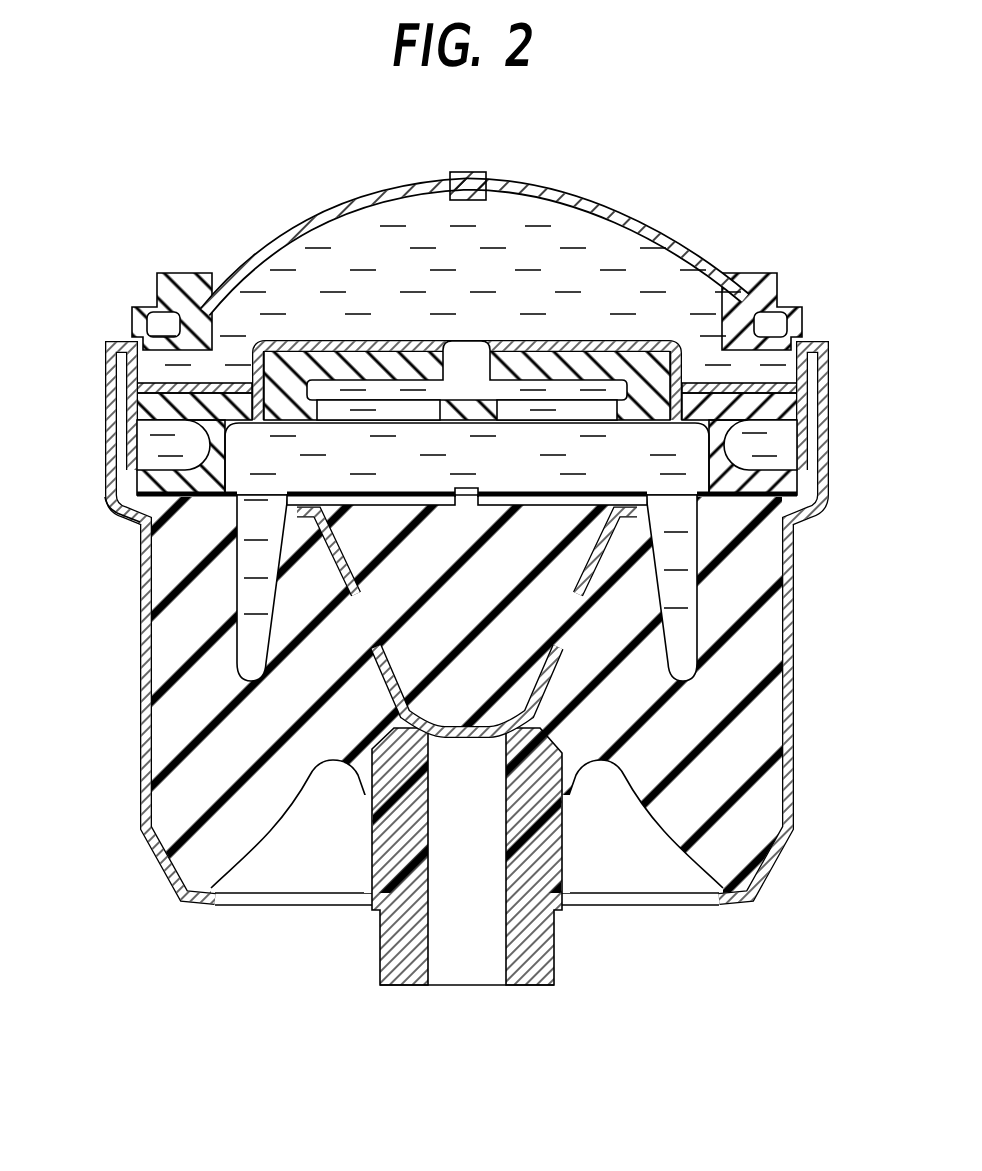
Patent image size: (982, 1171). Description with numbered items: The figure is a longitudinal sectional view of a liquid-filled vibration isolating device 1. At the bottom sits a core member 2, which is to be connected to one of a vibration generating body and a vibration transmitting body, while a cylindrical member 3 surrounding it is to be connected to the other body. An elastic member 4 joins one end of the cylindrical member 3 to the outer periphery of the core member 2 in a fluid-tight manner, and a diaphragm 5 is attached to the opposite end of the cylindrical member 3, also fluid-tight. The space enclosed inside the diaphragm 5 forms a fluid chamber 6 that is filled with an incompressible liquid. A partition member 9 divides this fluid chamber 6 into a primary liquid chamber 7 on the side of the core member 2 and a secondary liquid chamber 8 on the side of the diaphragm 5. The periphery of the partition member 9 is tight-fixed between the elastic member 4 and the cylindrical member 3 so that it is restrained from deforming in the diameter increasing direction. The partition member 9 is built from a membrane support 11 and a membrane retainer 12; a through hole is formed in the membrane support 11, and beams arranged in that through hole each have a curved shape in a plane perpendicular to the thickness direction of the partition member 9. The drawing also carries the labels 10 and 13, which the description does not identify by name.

The liquid-filled vibration isolating device 1 is at (610, 174).
The core member 2 is at (532, 947).
The cylindrical member 3 is at (782, 855).
The elastic member 4 is at (436, 617).
The diaphragm 5 is at (267, 250).
The fluid chamber 6 is at (670, 290).
The primary liquid chamber 7 is at (657, 470).
The secondary liquid chamber 8 is at (516, 232).
The partition member 9 is at (812, 335).
The sensor plate 10 is at (383, 370).
The membrane support 11 is at (137, 520).
The membrane retainer 12 is at (274, 343).
The window hole 13 is at (158, 443).